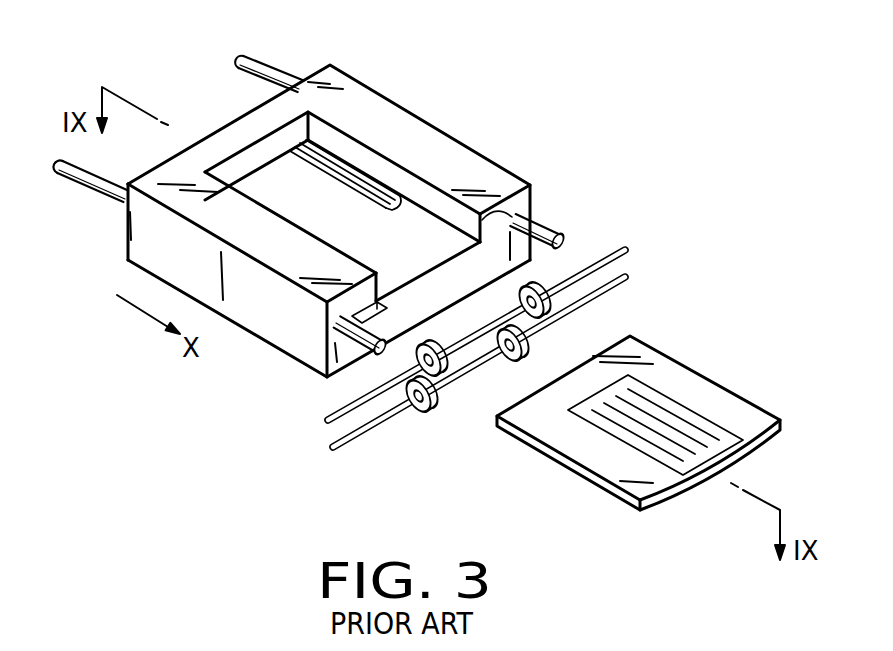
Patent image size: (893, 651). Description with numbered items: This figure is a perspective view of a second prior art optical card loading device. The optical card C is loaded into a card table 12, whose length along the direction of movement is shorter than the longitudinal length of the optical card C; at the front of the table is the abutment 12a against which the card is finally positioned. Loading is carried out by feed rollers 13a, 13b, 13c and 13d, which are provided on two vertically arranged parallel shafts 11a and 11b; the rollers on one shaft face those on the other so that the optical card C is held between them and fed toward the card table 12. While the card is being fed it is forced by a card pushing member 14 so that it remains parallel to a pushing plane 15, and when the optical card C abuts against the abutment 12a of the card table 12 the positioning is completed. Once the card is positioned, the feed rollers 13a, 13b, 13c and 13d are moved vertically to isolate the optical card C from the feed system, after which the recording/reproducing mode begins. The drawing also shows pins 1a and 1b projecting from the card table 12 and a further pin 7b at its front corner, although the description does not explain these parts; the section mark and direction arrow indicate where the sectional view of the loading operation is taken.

The pin 1a is at (273, 72).
The pin 1b is at (84, 186).
The card table 12 is at (390, 100).
The abutment 12a is at (248, 157).
The card pushing member 14 is at (388, 203).
The pushing plane 15 is at (450, 213).
The pin 7b is at (515, 216).
The parallel shaft 11a is at (628, 246).
The parallel shaft 11b is at (631, 273).
The feed roller 13a is at (540, 285).
The feed roller 13b is at (445, 392).
The feed roller 13c is at (530, 350).
The feed roller 13d is at (418, 412).
The optical card C is at (715, 388).